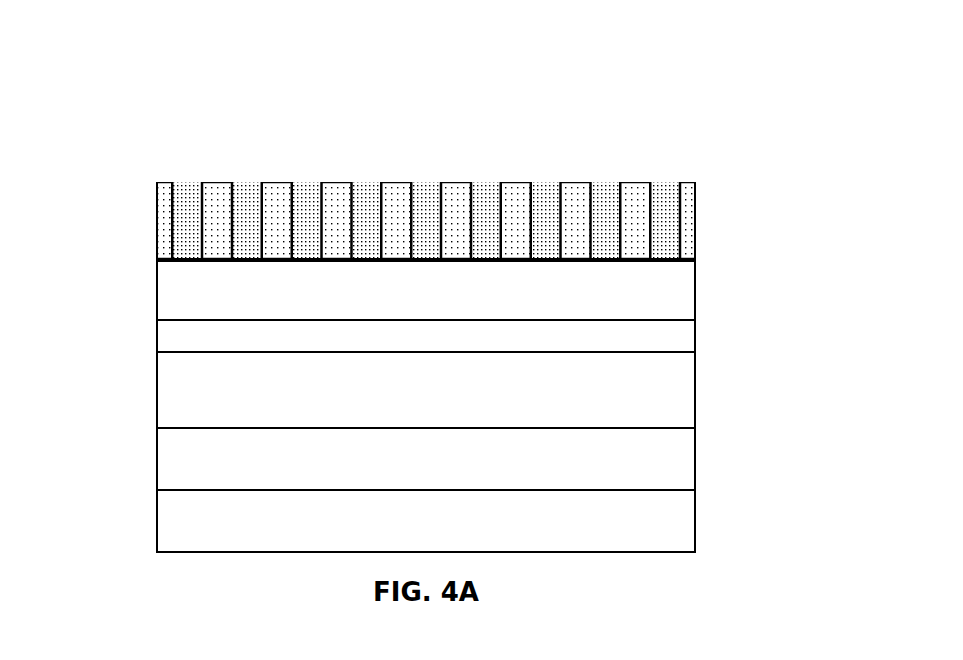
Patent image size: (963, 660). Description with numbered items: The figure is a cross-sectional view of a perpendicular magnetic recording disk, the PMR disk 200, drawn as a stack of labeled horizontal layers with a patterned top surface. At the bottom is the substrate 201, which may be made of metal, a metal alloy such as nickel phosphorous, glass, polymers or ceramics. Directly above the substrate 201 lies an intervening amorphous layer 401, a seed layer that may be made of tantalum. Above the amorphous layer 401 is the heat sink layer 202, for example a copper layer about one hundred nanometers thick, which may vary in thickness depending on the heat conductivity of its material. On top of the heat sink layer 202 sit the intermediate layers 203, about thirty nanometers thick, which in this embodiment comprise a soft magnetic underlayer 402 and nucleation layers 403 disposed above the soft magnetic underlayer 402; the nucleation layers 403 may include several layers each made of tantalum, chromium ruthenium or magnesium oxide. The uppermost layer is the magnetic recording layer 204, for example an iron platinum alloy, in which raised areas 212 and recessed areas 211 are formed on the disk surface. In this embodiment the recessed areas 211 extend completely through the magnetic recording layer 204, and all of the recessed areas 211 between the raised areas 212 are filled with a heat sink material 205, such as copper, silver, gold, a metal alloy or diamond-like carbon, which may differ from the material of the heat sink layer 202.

The PMR disk 200 is at (359, 406).
The substrate 201 is at (426, 521).
The heat sink layer 202 is at (426, 390).
The intermediate layers 203 is at (359, 306).
The magnetic recording layer 204 is at (470, 148).
The heat sink material 205 is at (187, 180).
The recessed areas 211 is at (461, 143).
The raised areas 212 is at (455, 173).
The amorphous layer 401 is at (426, 459).
The soft magnetic underlayer 402 is at (426, 336).
The nucleation layers 403 is at (426, 290).